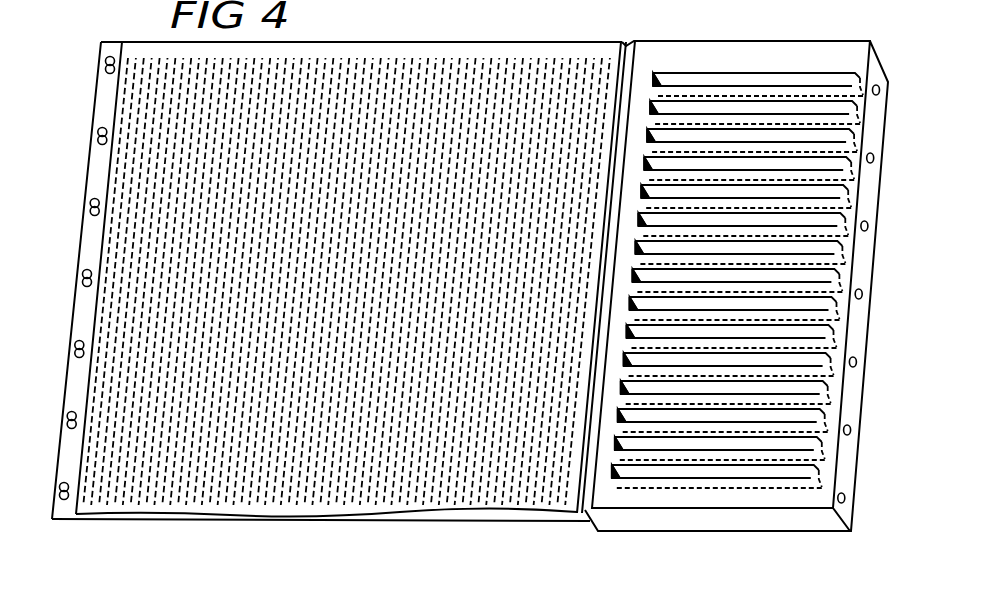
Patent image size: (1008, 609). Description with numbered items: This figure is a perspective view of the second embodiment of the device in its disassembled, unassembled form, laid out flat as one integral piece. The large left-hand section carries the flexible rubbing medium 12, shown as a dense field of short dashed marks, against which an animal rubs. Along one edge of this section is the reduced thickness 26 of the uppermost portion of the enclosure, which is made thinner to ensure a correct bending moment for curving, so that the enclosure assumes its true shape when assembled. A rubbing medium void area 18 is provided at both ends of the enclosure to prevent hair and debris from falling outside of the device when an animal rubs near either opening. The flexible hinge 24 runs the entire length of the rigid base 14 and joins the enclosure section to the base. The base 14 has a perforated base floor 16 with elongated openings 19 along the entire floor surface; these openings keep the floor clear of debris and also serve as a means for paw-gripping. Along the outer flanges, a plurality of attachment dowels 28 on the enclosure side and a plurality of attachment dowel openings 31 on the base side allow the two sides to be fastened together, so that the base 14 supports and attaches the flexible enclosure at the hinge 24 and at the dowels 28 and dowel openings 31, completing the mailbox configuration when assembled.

The flexible rubbing medium 12 is at (213, 463).
The rigid base 14 is at (675, 520).
The perforated base floor 16 is at (830, 408).
The rubbing medium void area 18 is at (420, 500).
The elongated openings 19 is at (752, 465).
The flexible hinge 24 is at (578, 512).
The reduced thickness 26 is at (312, 515).
The attachment dowels 28 is at (102, 135).
The attachment dowel openings 31 is at (850, 513).